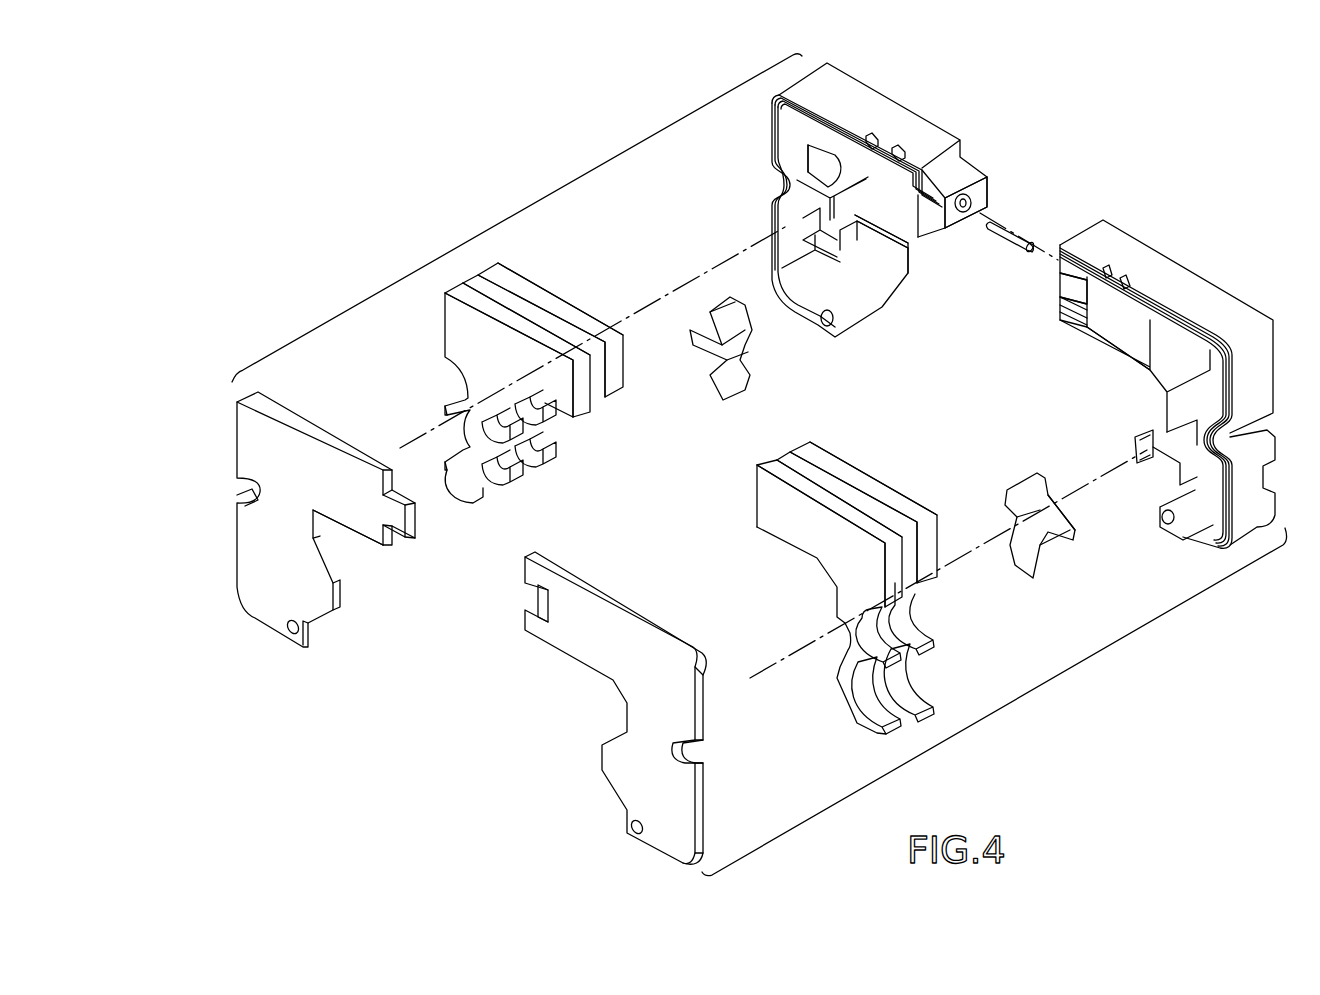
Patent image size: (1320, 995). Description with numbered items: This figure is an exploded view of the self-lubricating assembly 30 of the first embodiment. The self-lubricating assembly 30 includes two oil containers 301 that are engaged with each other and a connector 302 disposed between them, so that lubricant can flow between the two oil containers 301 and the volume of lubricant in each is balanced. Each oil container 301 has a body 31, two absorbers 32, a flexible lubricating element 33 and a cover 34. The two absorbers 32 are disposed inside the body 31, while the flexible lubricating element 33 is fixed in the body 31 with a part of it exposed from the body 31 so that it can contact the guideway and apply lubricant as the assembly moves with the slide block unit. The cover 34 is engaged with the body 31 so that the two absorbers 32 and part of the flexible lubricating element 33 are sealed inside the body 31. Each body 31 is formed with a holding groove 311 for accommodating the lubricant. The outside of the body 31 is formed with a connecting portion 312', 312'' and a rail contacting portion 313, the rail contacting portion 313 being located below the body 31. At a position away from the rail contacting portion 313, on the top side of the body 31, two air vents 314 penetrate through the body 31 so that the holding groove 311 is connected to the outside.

The self-lubricating assembly 30 is at (276, 81).
The oil container 301 is at (519, 223).
The connector 302 is at (1013, 232).
The body 31 is at (883, 118).
The holding groove 311 is at (818, 178).
The connecting portion 312' is at (969, 237).
The connecting portion 312'' is at (1048, 315).
The rail contacting portion 313 is at (887, 277).
The air vent 314 is at (898, 150).
The absorber 32 is at (570, 315).
The flexible lubricating element 33 is at (720, 347).
The cover 34 is at (260, 538).